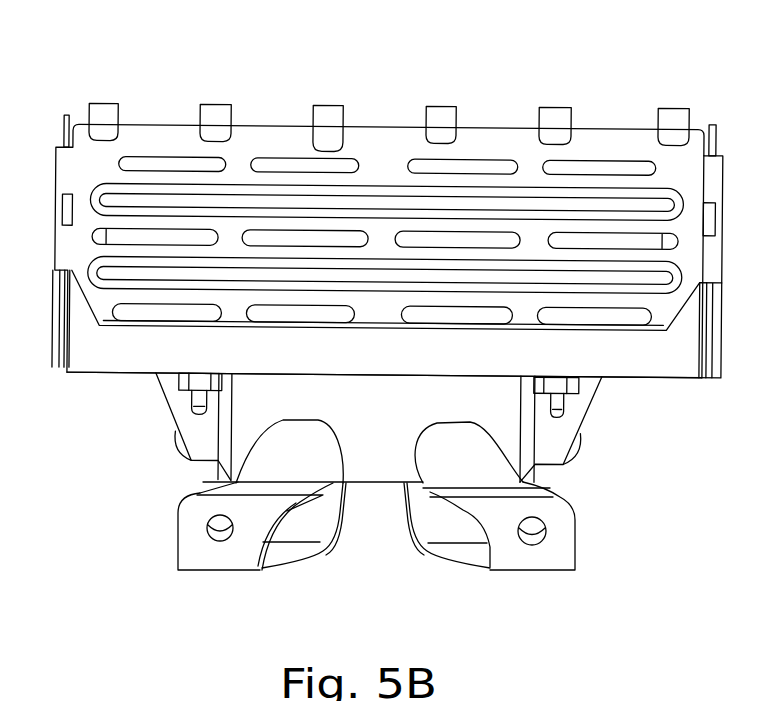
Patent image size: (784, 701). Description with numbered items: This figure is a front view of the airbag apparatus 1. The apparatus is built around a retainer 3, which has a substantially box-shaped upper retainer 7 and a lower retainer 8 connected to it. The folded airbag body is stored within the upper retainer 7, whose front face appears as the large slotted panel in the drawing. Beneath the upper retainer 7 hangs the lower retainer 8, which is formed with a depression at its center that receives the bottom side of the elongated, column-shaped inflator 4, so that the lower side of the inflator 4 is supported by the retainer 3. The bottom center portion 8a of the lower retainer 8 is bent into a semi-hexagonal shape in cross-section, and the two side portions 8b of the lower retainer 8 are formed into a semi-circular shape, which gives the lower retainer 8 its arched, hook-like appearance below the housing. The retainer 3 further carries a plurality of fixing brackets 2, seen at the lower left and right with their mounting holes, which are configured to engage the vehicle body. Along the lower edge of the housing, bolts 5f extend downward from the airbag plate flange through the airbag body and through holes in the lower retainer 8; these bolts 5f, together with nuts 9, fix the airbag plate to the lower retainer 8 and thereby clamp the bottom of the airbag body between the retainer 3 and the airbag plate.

The airbag apparatus 1 is at (602, 103).
The fixing bracket 2 is at (235, 555).
The retainer 3 is at (598, 498).
The inflator 4 is at (203, 452).
The bolt 5f is at (197, 403).
The upper retainer 7 is at (672, 352).
The lower retainer 8 is at (380, 462).
The bottom center portion 8a is at (235, 477).
The side portion 8b is at (203, 452).
The nut 9 is at (190, 385).